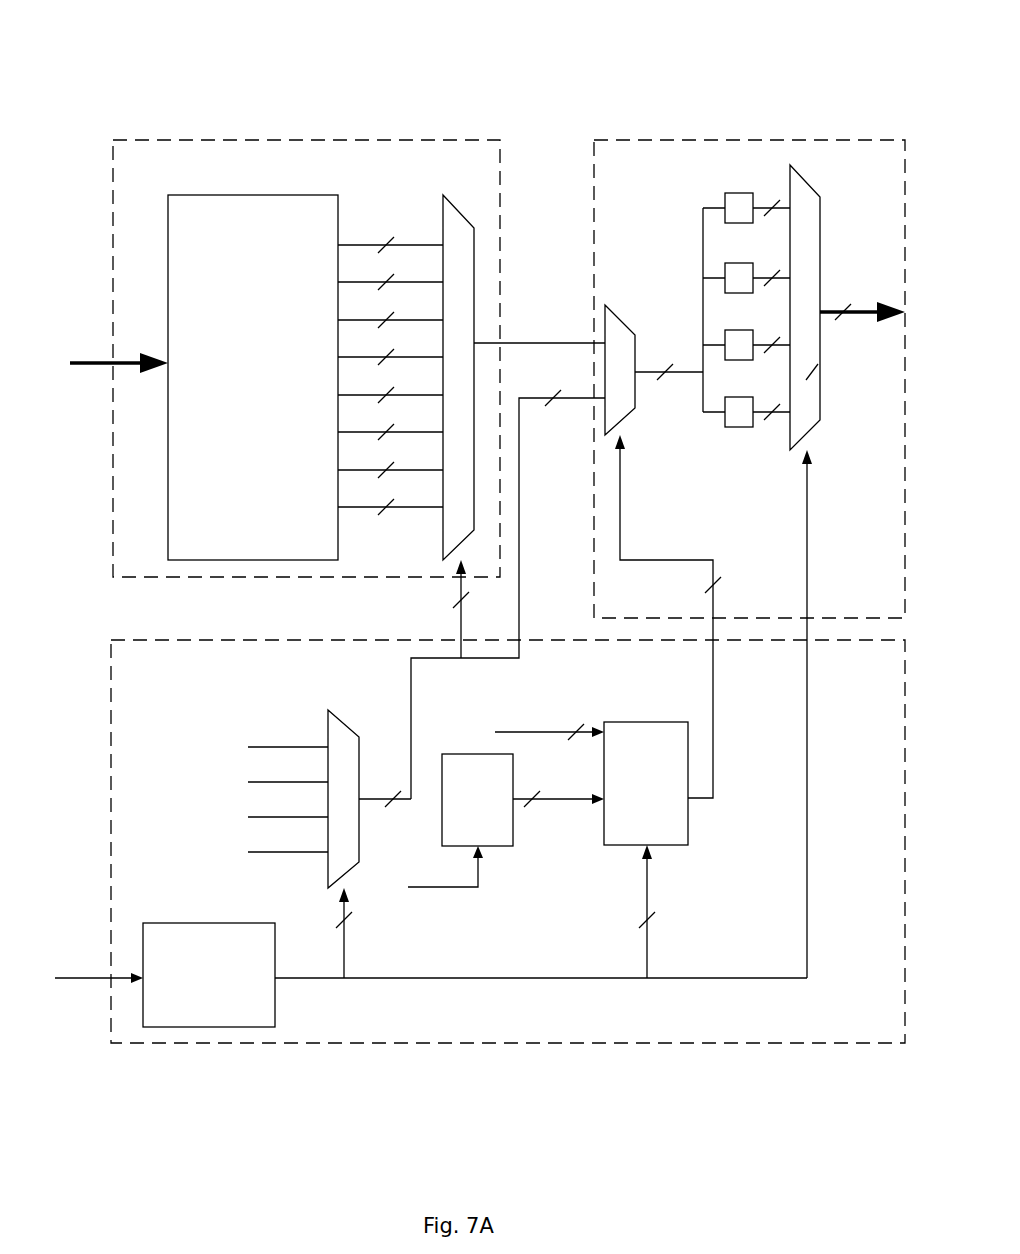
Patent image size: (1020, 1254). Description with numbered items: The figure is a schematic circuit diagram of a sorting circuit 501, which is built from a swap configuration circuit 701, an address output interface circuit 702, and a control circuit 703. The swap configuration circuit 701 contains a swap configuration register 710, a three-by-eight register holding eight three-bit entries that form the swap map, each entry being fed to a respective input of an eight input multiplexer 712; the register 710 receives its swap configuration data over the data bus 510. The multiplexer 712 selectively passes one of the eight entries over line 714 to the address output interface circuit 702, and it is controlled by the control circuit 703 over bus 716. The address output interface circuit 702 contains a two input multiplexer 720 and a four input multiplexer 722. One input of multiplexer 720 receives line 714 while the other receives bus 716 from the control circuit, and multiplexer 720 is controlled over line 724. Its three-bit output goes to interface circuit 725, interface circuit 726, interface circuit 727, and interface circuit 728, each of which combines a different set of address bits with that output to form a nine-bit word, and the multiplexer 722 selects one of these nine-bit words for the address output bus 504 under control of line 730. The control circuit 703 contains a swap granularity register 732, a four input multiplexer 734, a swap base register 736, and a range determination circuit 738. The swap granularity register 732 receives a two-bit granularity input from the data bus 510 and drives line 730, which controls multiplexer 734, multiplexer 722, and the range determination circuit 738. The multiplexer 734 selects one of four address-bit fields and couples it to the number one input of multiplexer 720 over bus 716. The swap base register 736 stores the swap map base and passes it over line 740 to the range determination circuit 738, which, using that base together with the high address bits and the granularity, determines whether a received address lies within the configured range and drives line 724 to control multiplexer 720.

The sorting circuit 501 is at (537, 34).
The address output bus 504 is at (887, 306).
The data bus 510 is at (90, 362).
The swap configuration circuit 701 is at (306, 358).
The address output interface circuit 702 is at (749, 379).
The control circuit 703 is at (508, 841).
The swap configuration register 710 is at (253, 377).
The eight input multiplexer 712 is at (467, 218).
The line 714 is at (568, 342).
The bus 716 is at (411, 692).
The two input multiplexer 720 is at (622, 330).
The four input multiplexer 722 is at (805, 185).
The line 724 is at (620, 525).
The interface circuit 725 is at (746, 184).
The interface circuit 726 is at (746, 254).
The interface circuit 727 is at (746, 321).
The interface circuit 728 is at (746, 387).
The line 730 is at (541, 961).
The swap granularity register 732 is at (228, 922).
The four input multiplexer 734 is at (336, 716).
The swap base register 736 is at (475, 753).
The range determination circuit 738 is at (650, 711).
The line 740 is at (560, 798).